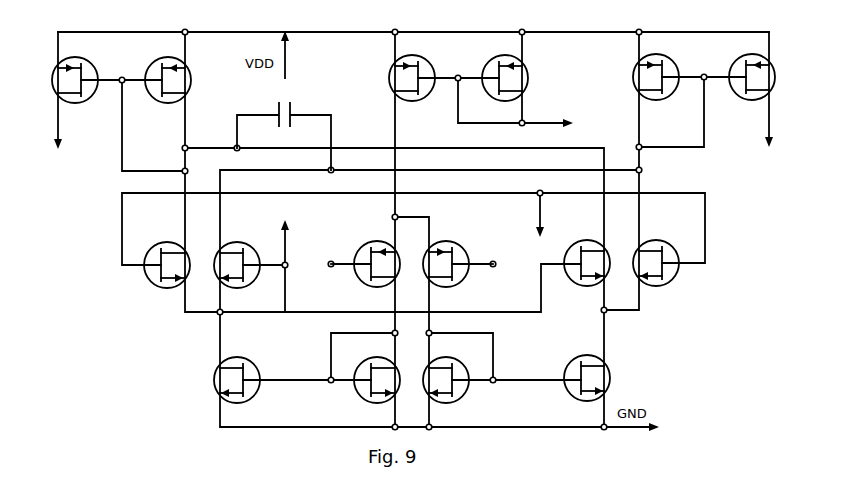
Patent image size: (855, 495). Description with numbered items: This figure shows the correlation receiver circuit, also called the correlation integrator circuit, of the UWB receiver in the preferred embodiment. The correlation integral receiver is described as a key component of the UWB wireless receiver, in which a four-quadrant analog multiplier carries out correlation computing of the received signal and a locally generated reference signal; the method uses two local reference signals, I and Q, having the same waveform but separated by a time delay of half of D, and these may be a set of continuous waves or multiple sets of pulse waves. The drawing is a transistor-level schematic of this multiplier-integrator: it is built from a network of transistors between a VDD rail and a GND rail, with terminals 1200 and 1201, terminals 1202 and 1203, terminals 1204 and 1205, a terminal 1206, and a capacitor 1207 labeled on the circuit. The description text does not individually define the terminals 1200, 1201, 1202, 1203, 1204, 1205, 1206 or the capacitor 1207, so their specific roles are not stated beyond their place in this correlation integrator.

The first bias input terminal 1200 is at (300, 243).
The second bias input terminal 1201 is at (524, 213).
The first control input terminal 1202 is at (331, 256).
The second control input terminal 1203 is at (493, 256).
The first output current terminal 1204 is at (73, 90).
The second output current terminal 1205 is at (753, 89).
The output terminal 1206 is at (546, 117).
The capacitor 1207 is at (284, 134).